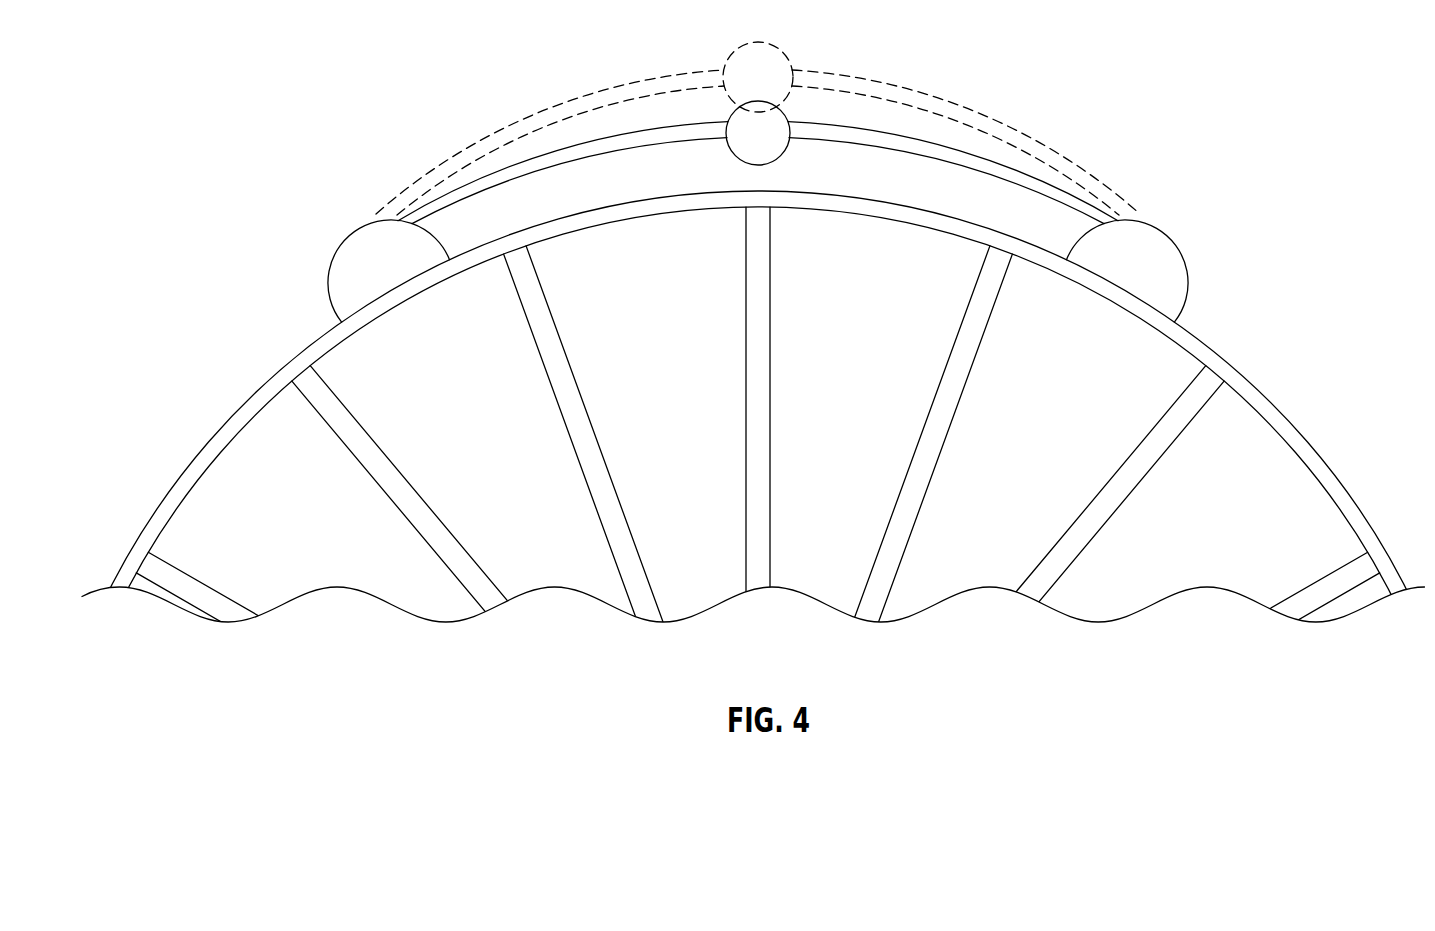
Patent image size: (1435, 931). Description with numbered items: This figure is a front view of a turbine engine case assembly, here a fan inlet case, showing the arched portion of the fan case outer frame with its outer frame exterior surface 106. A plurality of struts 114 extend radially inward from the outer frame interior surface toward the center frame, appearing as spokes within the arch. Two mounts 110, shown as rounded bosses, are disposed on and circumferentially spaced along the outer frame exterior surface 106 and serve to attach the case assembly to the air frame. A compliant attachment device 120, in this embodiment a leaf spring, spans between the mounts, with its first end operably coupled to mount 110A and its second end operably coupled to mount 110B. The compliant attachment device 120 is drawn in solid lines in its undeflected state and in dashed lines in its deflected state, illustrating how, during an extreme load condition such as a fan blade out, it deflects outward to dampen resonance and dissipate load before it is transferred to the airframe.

The outer frame exterior surface 106 is at (1245, 377).
The struts 114 is at (1117, 502).
The compliant attachment device 120 is at (877, 73).
The mounts 110 is at (760, 266).
The mount 110A is at (328, 296).
The mount 110B is at (1190, 288).